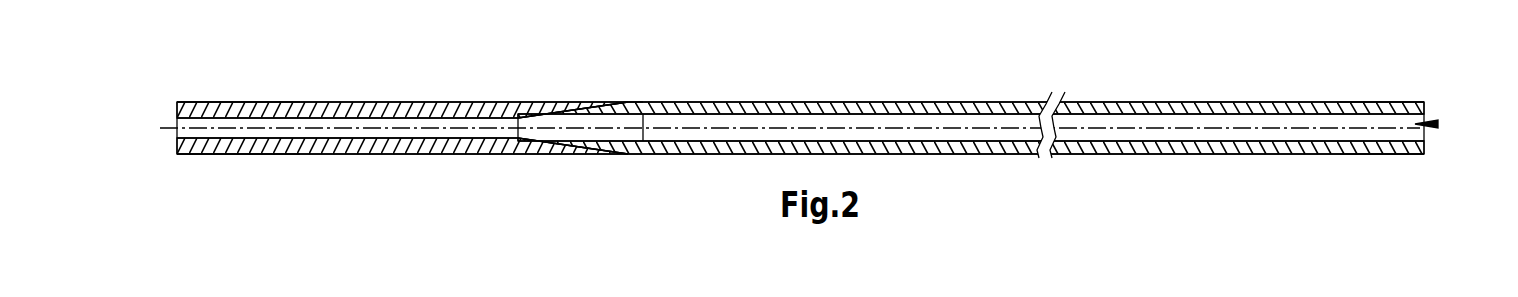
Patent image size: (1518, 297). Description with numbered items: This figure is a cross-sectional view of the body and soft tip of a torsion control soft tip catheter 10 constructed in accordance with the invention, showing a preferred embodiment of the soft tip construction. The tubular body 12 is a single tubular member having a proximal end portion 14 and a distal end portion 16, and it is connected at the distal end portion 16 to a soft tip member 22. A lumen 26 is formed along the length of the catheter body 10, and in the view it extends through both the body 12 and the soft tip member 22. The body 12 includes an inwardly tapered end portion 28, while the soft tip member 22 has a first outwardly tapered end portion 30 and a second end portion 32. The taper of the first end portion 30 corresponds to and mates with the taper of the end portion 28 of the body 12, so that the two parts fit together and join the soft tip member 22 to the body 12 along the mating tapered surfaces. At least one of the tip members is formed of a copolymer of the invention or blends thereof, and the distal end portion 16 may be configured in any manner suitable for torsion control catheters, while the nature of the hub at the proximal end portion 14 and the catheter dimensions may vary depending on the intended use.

The torsion control soft tip catheter 10 is at (822, 83).
The tubular body 12 is at (1147, 102).
The proximal end portion 14 is at (1347, 102).
The distal end portion 16 is at (241, 102).
The soft tip member 22 is at (364, 102).
The lumen 26 is at (1438, 124).
The inwardly tapered end portion 28 is at (620, 104).
The first outwardly tapered end portion 30 is at (582, 108).
The second end portion 32 is at (177, 108).